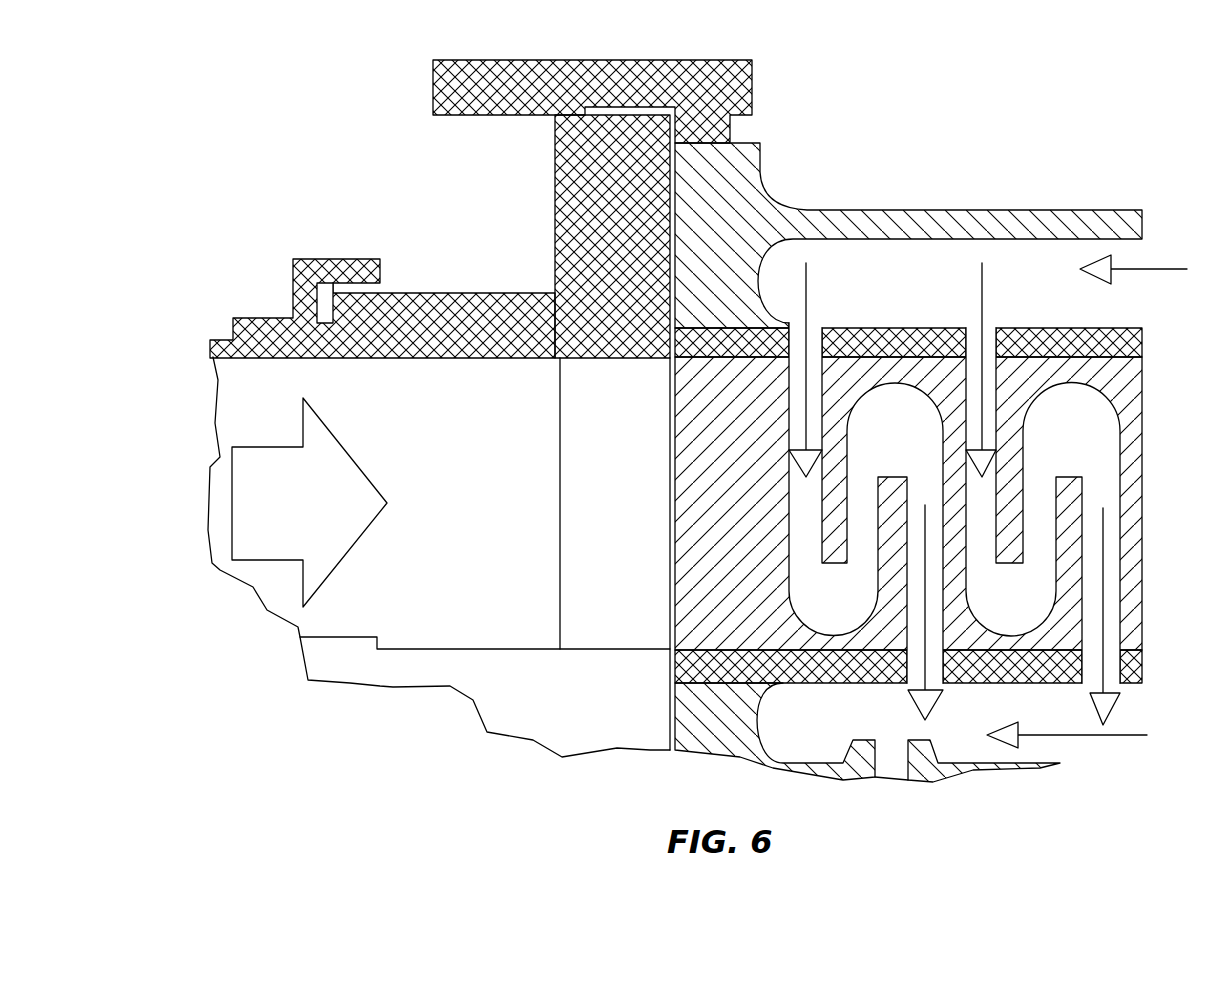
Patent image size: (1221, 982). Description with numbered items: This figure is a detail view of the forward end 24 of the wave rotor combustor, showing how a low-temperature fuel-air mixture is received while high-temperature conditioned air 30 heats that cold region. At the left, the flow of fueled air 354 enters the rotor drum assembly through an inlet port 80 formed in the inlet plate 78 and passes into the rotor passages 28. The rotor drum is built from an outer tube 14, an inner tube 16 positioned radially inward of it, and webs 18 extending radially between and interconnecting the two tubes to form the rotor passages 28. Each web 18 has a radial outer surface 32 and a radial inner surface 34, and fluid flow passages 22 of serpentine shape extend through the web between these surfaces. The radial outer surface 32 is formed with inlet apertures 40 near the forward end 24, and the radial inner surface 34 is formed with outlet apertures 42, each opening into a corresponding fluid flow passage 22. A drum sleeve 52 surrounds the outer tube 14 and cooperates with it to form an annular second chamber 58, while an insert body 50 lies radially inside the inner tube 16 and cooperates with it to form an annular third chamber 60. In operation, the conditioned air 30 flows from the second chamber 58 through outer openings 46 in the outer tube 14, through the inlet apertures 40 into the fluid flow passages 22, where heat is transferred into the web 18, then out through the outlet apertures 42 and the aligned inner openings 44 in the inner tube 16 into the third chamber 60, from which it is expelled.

The outer tube 14 is at (936, 319).
The inner tube 16 is at (942, 677).
The web 18 is at (1133, 435).
The fluid flow passage 22 is at (893, 431).
The forward end 24 is at (758, 124).
The rotor passage 28 is at (718, 477).
The high-temperature conditioned air 30 is at (1162, 268).
The radial outer surface 32 is at (1045, 352).
The radial inner surface 34 is at (1020, 688).
The inlet aperture 40 is at (799, 377).
The outlet aperture 42 is at (914, 639).
The inner opening 44 is at (912, 667).
The outer opening 46 is at (814, 329).
The insert body 50 is at (837, 770).
The drum sleeve 52 is at (893, 218).
The second chamber 58 is at (1015, 269).
The third chamber 60 is at (955, 746).
The inlet plate 78 is at (621, 124).
The inlet port 80 is at (644, 556).
The fueled air 354 is at (267, 405).